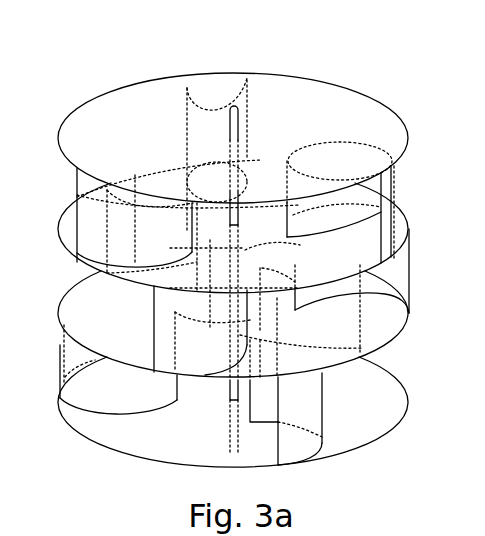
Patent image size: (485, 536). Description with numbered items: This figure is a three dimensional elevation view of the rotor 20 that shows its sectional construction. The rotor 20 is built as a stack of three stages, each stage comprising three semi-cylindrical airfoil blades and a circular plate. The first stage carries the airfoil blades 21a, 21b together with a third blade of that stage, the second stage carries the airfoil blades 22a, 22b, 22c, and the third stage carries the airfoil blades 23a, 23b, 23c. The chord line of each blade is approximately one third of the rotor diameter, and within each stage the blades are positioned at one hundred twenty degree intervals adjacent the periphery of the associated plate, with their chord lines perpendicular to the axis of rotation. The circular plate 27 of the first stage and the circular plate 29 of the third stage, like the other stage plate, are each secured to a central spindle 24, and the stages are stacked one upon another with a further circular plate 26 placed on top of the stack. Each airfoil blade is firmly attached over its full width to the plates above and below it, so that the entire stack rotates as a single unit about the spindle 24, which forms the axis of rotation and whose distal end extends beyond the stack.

The rotor 20 is at (233, 57).
The semi-cylindrical airfoil blade 21a is at (285, 177).
The semi-cylindrical airfoil blade 21b is at (185, 132).
The semi-cylindrical airfoil blade 22a is at (295, 278).
The semi-cylindrical airfoil blade 22b is at (107, 217).
The semi-cylindrical airfoil blade 22c is at (154, 313).
The semi-cylindrical airfoil blade 23a is at (360, 344).
The semi-cylindrical airfoil blade 23b is at (128, 415).
The semi-cylindrical airfoil blade 23c is at (323, 397).
The central spindle 24 is at (230, 388).
The circular plate 26 is at (408, 142).
The circular plate 27 is at (400, 252).
The circular plate 29 is at (405, 419).